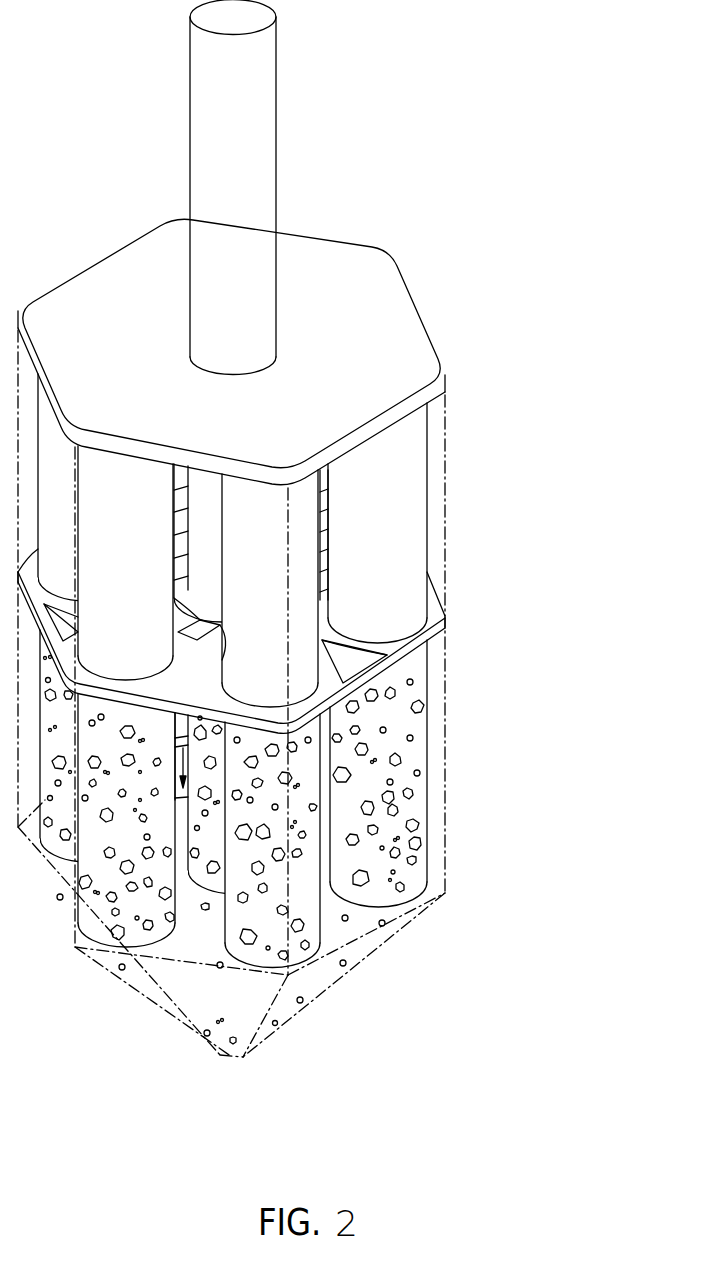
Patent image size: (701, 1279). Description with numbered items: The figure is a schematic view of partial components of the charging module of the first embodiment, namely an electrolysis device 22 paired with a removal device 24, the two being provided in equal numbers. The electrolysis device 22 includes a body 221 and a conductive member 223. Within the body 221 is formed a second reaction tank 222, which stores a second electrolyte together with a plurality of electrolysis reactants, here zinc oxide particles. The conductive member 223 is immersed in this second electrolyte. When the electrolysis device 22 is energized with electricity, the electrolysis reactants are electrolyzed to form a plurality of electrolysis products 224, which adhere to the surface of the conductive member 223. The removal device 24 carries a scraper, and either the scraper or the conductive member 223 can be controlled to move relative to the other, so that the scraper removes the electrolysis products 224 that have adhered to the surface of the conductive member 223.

The electrolysis device 22 is at (596, 677).
The body 221 is at (445, 673).
The second reaction tank 222 is at (433, 453).
The conductive member 223 is at (427, 782).
The electrolysis products 224 is at (418, 828).
The removal device 24 is at (452, 594).